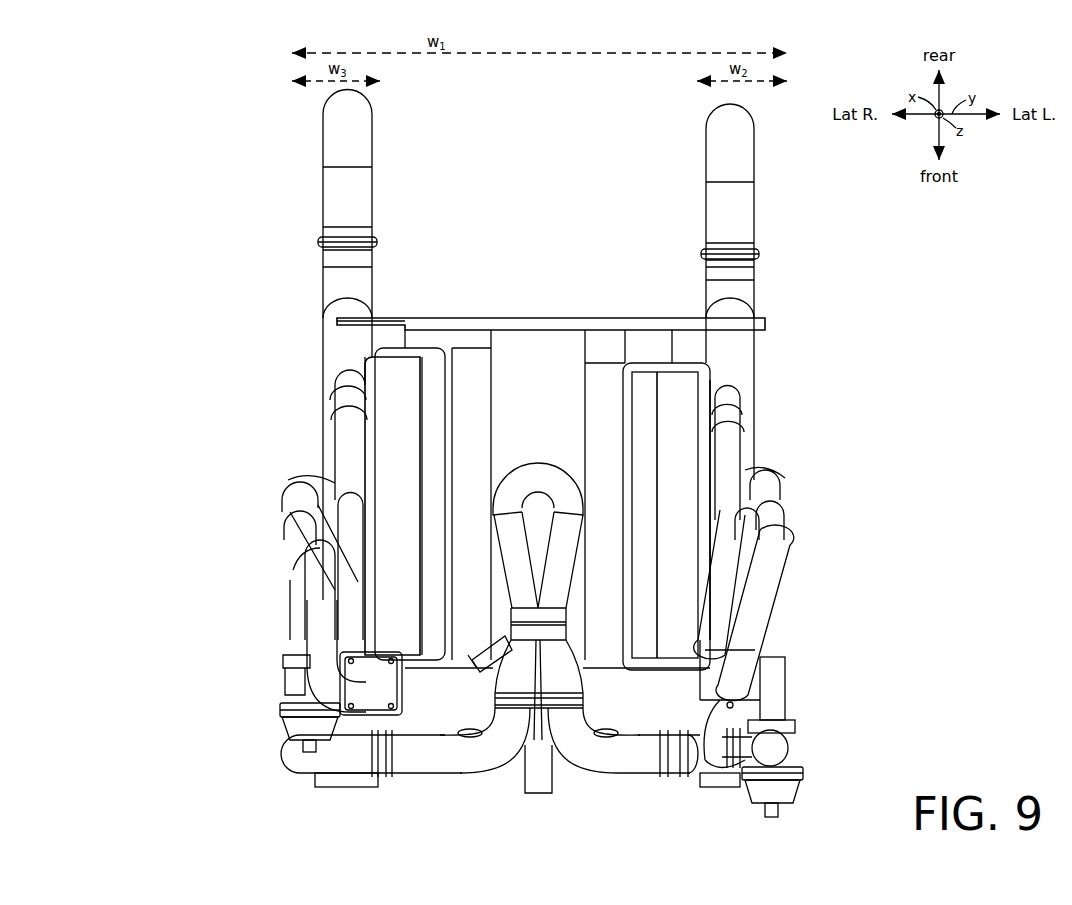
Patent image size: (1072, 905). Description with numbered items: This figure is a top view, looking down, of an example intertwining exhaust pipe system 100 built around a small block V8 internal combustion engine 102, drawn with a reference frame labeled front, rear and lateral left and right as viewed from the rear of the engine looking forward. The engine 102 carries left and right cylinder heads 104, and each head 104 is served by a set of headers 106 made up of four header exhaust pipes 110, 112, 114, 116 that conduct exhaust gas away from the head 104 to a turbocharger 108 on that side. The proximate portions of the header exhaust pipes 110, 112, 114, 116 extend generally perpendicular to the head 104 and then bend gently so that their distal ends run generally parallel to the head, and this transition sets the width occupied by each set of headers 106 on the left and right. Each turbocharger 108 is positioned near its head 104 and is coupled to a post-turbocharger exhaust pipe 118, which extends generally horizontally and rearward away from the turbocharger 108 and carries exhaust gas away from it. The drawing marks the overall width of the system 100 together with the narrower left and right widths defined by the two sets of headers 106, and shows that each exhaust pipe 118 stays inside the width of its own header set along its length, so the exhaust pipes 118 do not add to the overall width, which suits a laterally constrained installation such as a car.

The system 100 is at (96, 68).
The internal combustion engine 102 is at (508, 312).
The cylinder head 104 is at (697, 416).
The set of headers 106 is at (300, 552).
The turbocharger 108 is at (286, 733).
The header exhaust pipe 110 is at (298, 604).
The header exhaust pipe 112 is at (295, 530).
The header exhaust pipe 114 is at (295, 490).
The header exhaust pipe 116 is at (340, 398).
The PT exhaust pipe 118 is at (320, 288).